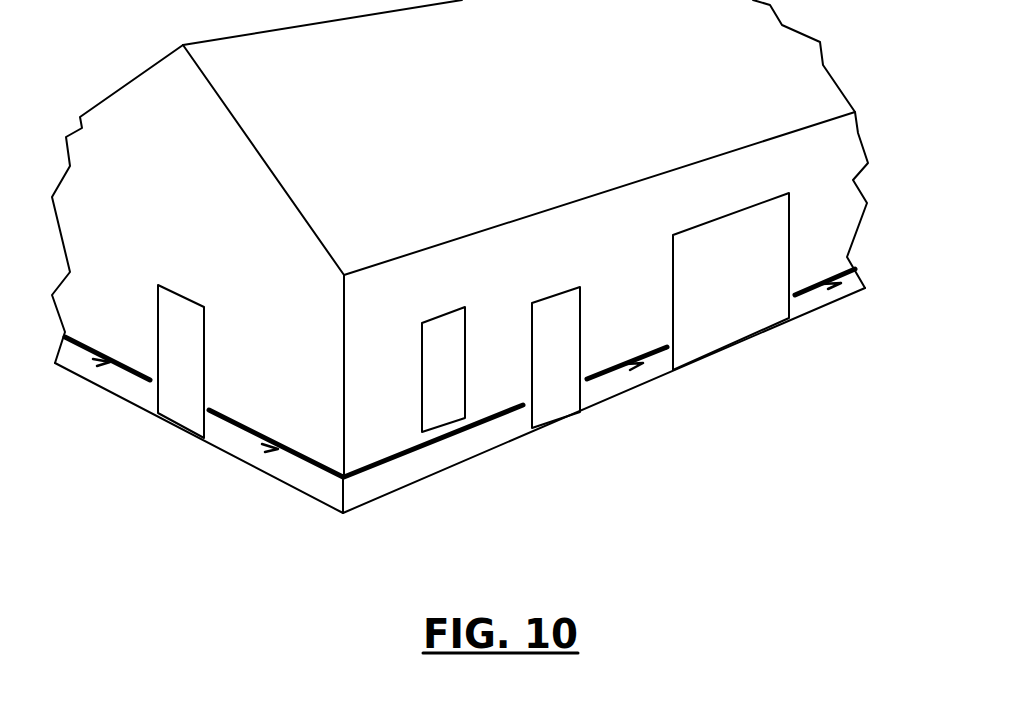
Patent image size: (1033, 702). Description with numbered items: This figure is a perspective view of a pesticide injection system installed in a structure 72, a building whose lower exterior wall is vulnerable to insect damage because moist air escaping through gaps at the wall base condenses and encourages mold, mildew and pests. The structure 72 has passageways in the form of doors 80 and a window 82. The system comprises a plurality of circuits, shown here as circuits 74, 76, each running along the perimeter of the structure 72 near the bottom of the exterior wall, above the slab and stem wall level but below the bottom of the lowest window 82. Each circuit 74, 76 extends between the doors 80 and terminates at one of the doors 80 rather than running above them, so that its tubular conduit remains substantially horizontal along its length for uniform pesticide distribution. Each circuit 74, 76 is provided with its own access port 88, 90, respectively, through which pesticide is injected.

The structure 72 is at (428, 477).
The circuit 74 is at (307, 463).
The circuit 76 is at (597, 380).
The doors 80 is at (185, 297).
The window 82 is at (463, 330).
The access port 88 is at (266, 450).
The access port 90 is at (635, 367).